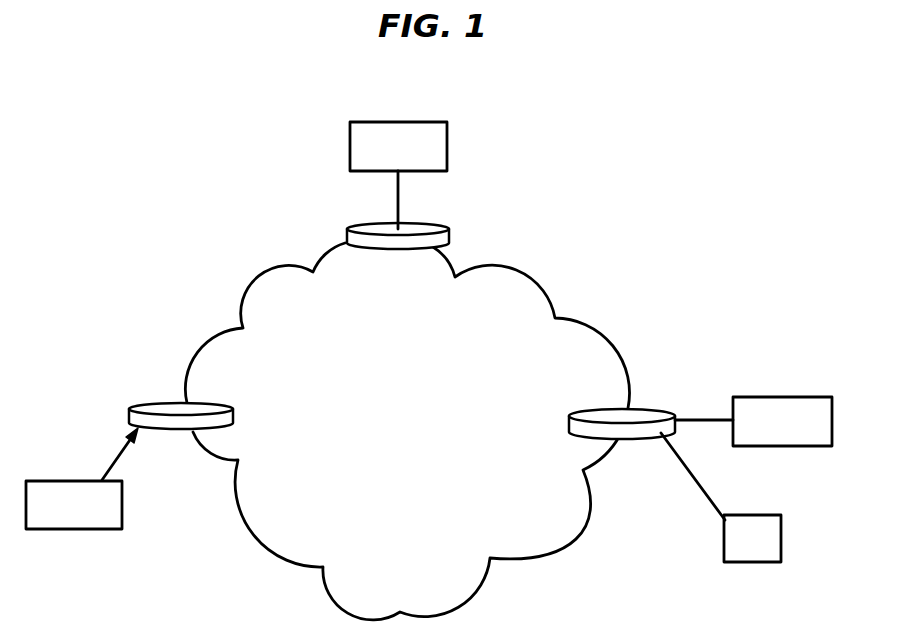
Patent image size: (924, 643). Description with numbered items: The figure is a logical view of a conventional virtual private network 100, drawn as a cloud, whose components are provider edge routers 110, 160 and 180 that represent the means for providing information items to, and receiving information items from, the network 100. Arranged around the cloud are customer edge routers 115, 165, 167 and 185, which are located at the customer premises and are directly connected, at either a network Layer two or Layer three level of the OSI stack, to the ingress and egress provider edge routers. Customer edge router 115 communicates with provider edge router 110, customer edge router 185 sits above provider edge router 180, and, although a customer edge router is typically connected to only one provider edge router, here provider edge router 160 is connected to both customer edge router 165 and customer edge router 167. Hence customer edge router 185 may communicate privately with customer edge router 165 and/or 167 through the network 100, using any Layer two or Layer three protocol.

The virtual private network 100 is at (553, 558).
The provider edge router 110 is at (157, 407).
The customer edge router 115 is at (47, 480).
The provider edge router 160 is at (654, 413).
The customer edge router 165 is at (780, 396).
The customer edge router 167 is at (782, 533).
The provider edge router 180 is at (432, 232).
The customer edge router 185 is at (447, 135).